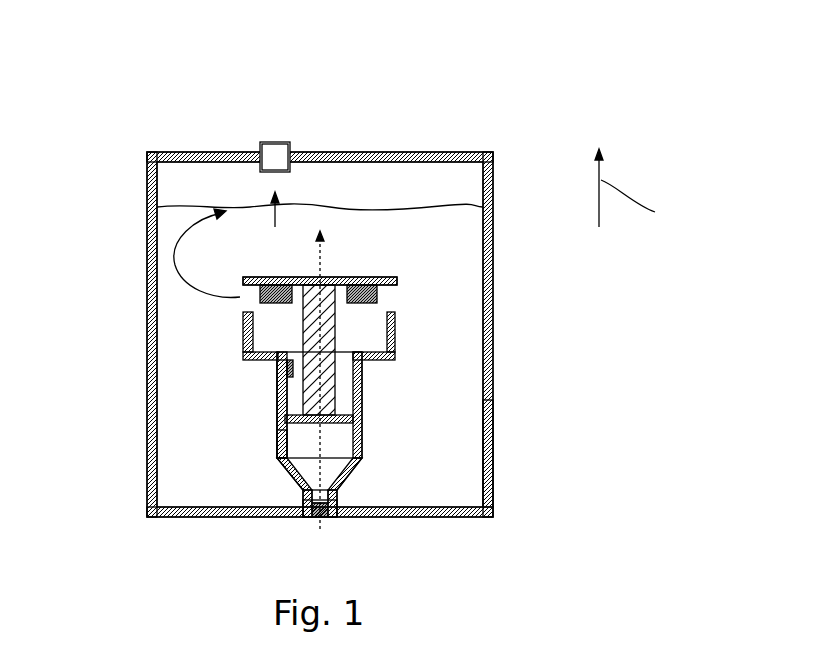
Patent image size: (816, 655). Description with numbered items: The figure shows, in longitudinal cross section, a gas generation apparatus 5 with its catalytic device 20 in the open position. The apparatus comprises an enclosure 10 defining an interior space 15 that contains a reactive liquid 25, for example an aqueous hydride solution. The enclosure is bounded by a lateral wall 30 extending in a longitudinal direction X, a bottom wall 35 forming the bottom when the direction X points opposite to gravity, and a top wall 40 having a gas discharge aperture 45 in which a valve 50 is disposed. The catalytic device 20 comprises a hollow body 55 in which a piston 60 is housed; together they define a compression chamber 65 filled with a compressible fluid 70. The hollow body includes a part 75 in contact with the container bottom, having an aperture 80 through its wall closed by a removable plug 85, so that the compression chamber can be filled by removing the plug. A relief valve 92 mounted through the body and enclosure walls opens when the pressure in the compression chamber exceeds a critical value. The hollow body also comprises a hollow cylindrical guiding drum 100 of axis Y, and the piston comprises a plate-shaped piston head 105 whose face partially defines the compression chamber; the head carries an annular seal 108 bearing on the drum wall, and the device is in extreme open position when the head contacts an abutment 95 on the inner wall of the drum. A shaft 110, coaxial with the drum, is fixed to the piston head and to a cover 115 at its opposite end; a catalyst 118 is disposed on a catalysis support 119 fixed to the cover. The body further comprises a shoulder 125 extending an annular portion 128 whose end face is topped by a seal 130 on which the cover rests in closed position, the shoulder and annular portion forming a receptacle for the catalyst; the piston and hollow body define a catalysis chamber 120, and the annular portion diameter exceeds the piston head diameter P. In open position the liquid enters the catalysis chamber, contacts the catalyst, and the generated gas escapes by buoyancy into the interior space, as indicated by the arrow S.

The gas generation apparatus 5 is at (512, 228).
The enclosure 10 is at (495, 382).
The interior space 15 is at (500, 337).
The catalytic device 20 is at (295, 468).
The reactive liquid 25 is at (157, 267).
The lateral wall 30 is at (495, 458).
The bottom wall 35 is at (445, 517).
The top wall 40 is at (405, 152).
The gas discharge aperture 45 is at (287, 142).
The valve 50 is at (268, 142).
The hollow body 55 is at (277, 420).
The piston 60 is at (362, 395).
The compression chamber 65 is at (340, 470).
The compressible fluid 70 is at (296, 480).
The part 75 is at (345, 455).
The aperture 80 is at (330, 513).
The plug 85 is at (318, 517).
The relief valve 92 is at (340, 520).
The abutment 95 is at (290, 378).
The guiding drum 100 is at (363, 366).
The piston head 105 is at (362, 425).
The annular seal 108 is at (280, 437).
The shaft 110 is at (303, 330).
The cover 115 is at (388, 277).
The catalyst 118 is at (252, 287).
The catalysis support 119 is at (240, 277).
The catalysis chamber 120 is at (397, 332).
The shoulder 125 is at (277, 372).
The annular portion 128 is at (243, 348).
The seal 130 is at (243, 318).
The arrow S is at (292, 201).
The piston head diameter P is at (412, 288).
The longitudinal direction X is at (634, 188).
The axis Y is at (328, 250).